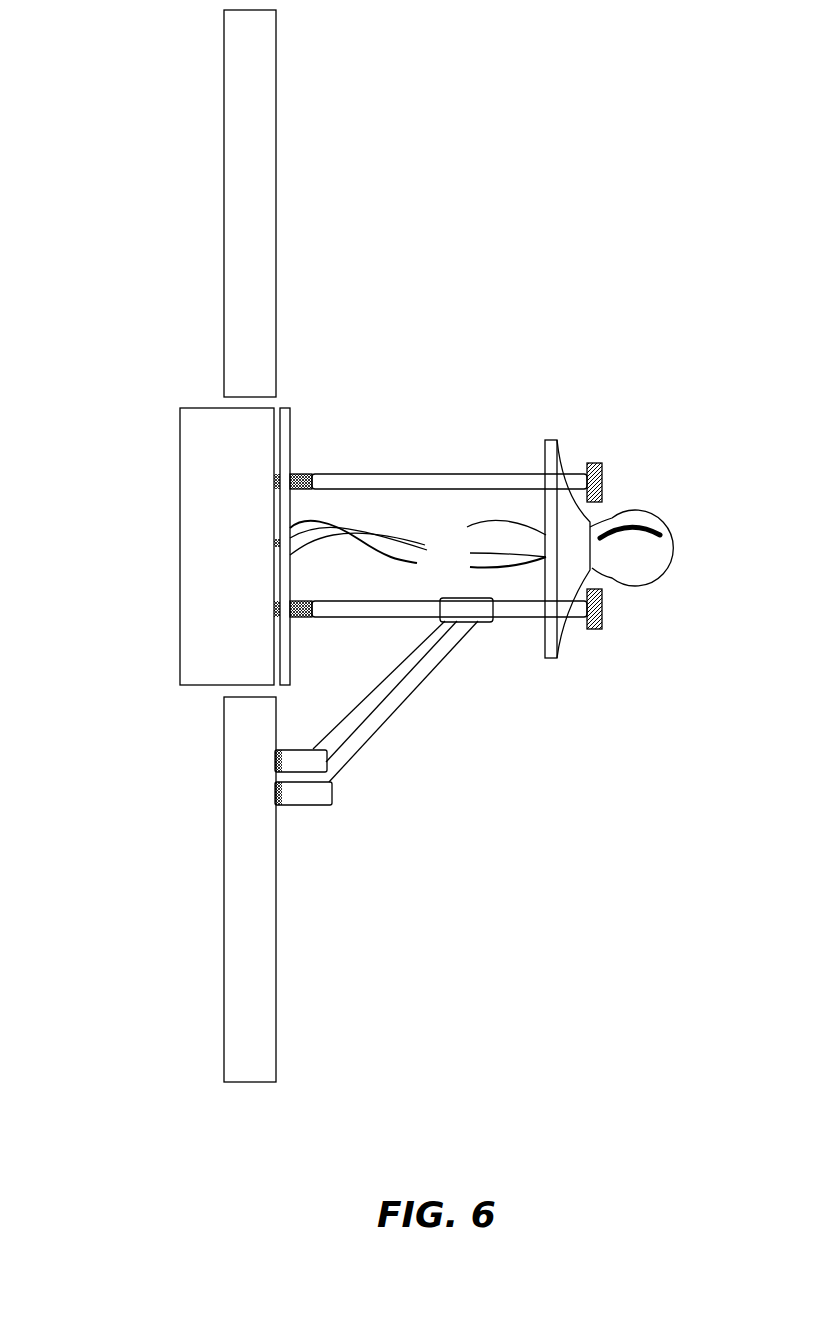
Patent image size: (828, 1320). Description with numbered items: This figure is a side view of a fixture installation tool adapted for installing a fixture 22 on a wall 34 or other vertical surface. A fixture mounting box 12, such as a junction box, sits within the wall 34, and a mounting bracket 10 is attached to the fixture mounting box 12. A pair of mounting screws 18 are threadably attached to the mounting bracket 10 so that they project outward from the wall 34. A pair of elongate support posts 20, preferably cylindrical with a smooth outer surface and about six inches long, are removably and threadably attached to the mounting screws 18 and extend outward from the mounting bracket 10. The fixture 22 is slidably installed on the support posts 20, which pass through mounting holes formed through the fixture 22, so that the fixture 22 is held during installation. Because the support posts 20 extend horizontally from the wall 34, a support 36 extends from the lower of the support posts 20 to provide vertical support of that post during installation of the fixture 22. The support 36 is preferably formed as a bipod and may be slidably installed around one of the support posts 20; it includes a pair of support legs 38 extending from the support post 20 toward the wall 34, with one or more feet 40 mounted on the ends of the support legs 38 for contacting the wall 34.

The mounting bracket 10 is at (286, 408).
The fixture mounting box 12 is at (180, 516).
The mounting screws 18 is at (305, 474).
The support posts 20 is at (394, 474).
The fixture 22 is at (553, 440).
The wall 34 is at (276, 185).
The support 36 is at (424, 719).
The support legs 38 is at (395, 713).
The feet 40 is at (310, 805).